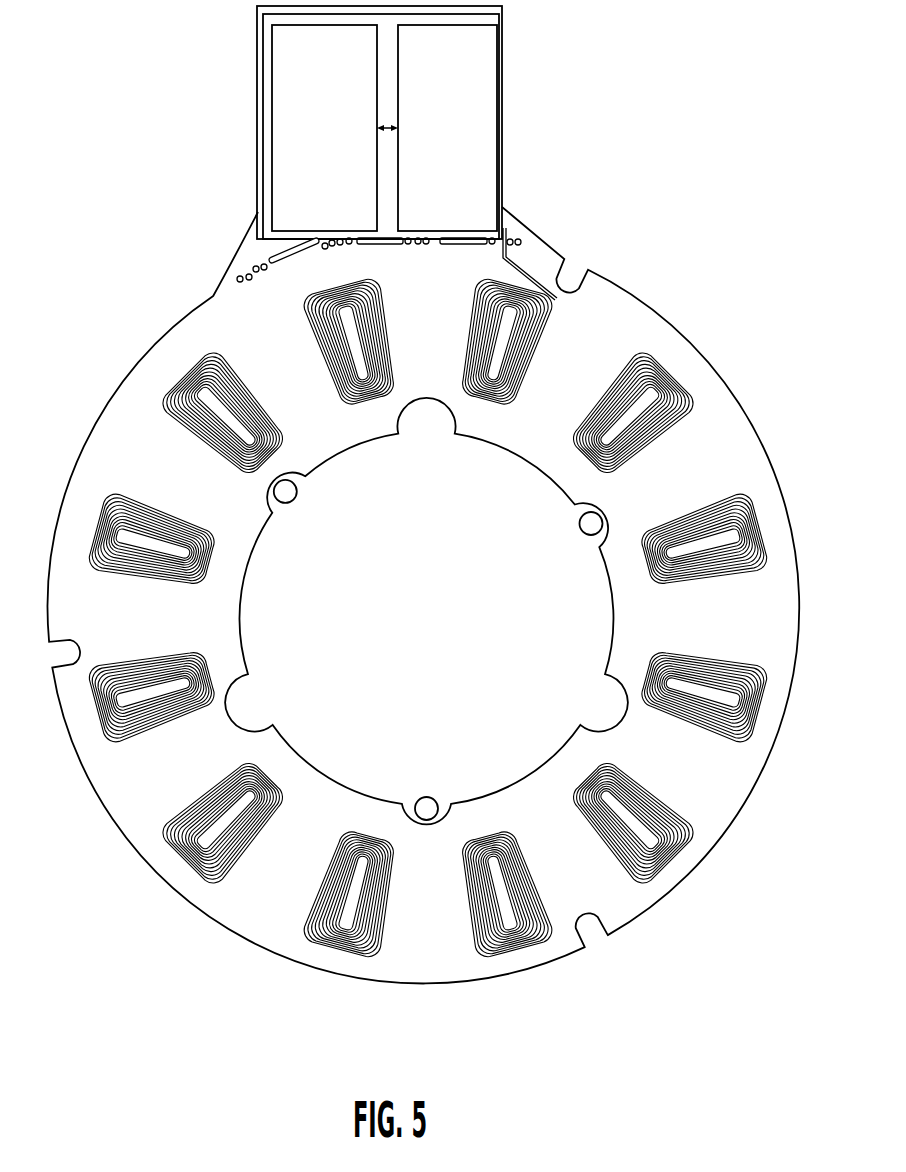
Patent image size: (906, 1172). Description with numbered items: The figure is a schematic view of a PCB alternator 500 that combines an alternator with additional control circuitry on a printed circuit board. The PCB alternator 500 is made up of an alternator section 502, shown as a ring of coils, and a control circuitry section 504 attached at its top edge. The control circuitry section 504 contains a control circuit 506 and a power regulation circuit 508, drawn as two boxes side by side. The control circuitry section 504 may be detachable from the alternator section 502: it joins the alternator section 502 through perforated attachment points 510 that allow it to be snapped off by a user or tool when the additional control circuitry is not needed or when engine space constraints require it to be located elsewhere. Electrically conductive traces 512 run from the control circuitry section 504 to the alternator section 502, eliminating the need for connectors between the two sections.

The PCB alternator 500 is at (65, 220).
The alternator section 502 is at (731, 384).
The control circuitry section 504 is at (248, 159).
The control circuit 506 is at (272, 63).
The power regulation circuit 508 is at (487, 42).
The perforated attachment points 510 is at (241, 279).
The electrically conductive traces 512 is at (508, 215).